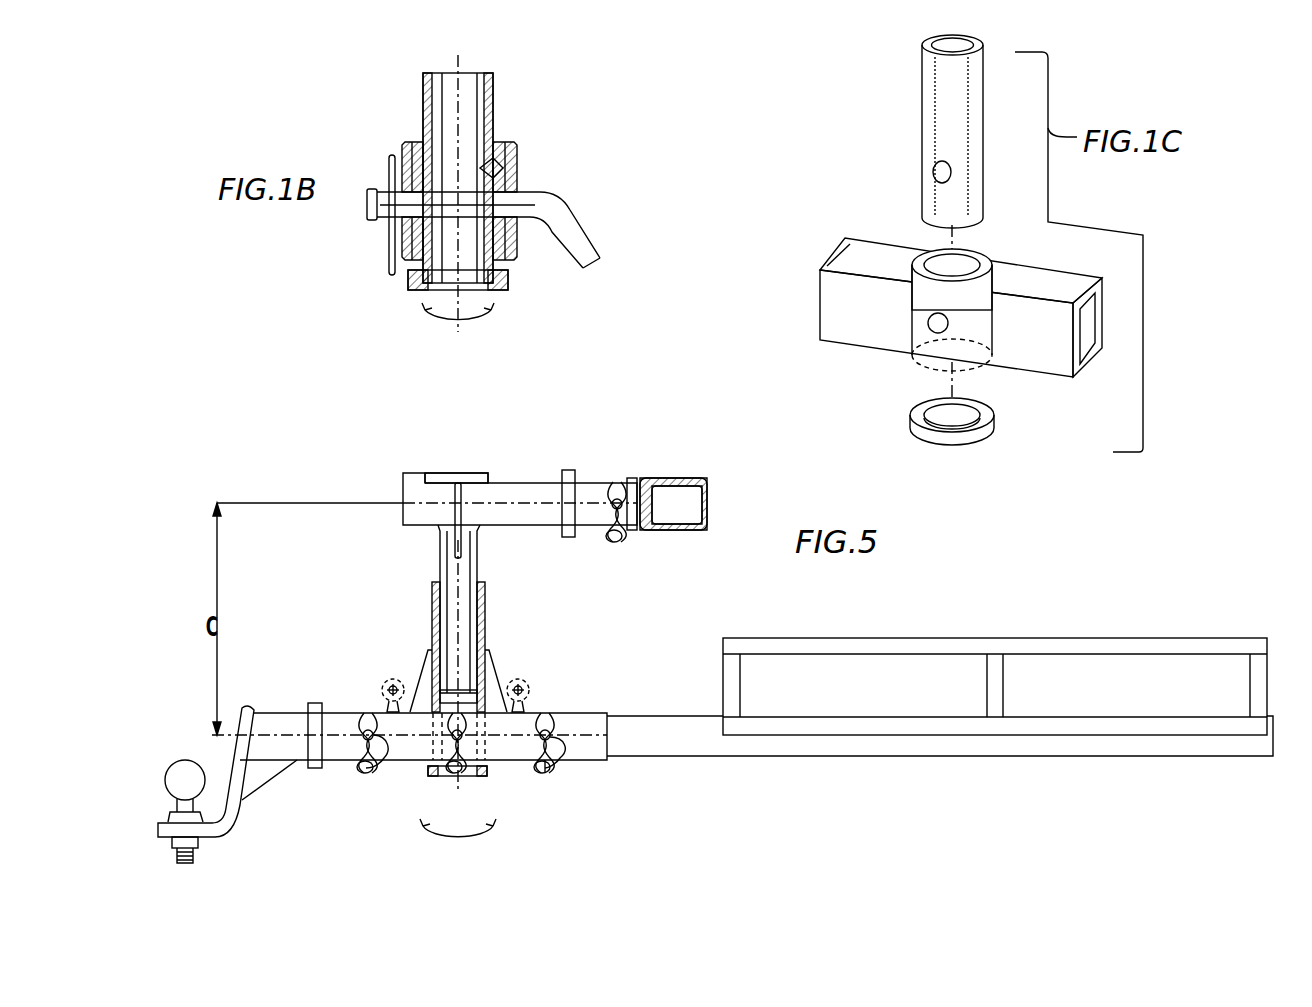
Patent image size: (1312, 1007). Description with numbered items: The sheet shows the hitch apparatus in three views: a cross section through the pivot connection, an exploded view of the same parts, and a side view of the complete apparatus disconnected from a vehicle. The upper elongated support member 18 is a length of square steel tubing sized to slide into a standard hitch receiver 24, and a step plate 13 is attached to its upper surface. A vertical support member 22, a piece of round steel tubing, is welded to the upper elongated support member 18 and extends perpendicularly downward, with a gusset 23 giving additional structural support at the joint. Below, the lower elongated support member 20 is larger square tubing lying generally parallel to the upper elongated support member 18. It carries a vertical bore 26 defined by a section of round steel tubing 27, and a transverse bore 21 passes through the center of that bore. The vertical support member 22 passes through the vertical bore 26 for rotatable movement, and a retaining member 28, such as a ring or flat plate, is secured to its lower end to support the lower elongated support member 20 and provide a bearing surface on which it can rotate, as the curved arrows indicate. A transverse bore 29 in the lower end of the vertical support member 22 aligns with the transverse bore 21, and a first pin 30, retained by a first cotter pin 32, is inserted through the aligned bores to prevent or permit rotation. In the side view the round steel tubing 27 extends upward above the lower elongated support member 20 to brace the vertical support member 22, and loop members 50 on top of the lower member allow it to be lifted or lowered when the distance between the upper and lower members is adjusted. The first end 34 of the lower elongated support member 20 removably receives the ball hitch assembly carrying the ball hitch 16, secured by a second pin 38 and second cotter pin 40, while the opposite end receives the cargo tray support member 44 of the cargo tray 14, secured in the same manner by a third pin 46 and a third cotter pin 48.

In FIG. 5, the step plate 13 is at (449, 473).
In FIG. 5, the cargo tray 14 is at (1117, 640).
In FIG. 5, the ball hitch 16 is at (168, 776).
In FIG. 5, the upper elongated support member 18 is at (540, 483).
In FIG. 1C, the lower elongated support member 20 is at (843, 263).
In FIG. 5, the lower elongated support member 20 is at (572, 712).
In FIG. 1C, the transverse bore 21 is at (930, 328).
In FIG. 1B, the vertical support member 22 is at (493, 99).
In FIG. 1C, the vertical support member 22 is at (932, 131).
In FIG. 5, the vertical support member 22 is at (480, 560).
In FIG. 5, the gusset 23 is at (455, 553).
In FIG. 5, the hitch receiver 24 is at (597, 482).
In FIG. 1B, the vertical bore 26 is at (505, 170).
In FIG. 1C, the vertical bore 26 is at (968, 262).
In FIG. 1B, the round steel tubing 27 is at (500, 148).
In FIG. 1C, the round steel tubing 27 is at (932, 360).
In FIG. 5, the round steel tubing 27 is at (488, 598).
In FIG. 1B, the retaining member 28 is at (506, 287).
In FIG. 1C, the retaining member 28 is at (994, 422).
In FIG. 5, the retaining member 28 is at (432, 771).
In FIG. 1C, the transverse bore 29 is at (936, 174).
In FIG. 1B, the first pin 30 is at (578, 228).
In FIG. 5, the first pin 30 is at (438, 778).
In FIG. 1B, the first cotter pin 32 is at (390, 228).
In FIG. 5, the first cotter pin 32 is at (465, 776).
In FIG. 5, the first end 34 is at (318, 770).
In FIG. 5, the second pin 38 is at (377, 770).
In FIG. 5, the second cotter pin 40 is at (356, 770).
In FIG. 5, the cargo tray support member 44 is at (703, 758).
In FIG. 5, the third pin 46 is at (563, 750).
In FIG. 5, the third cotter pin 48 is at (544, 771).
In FIG. 5, the loop member 50 is at (393, 678).